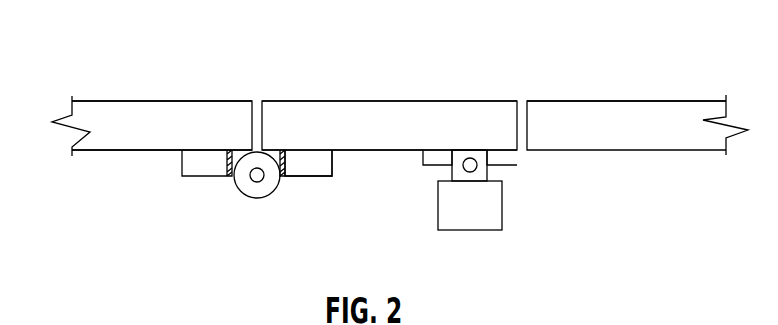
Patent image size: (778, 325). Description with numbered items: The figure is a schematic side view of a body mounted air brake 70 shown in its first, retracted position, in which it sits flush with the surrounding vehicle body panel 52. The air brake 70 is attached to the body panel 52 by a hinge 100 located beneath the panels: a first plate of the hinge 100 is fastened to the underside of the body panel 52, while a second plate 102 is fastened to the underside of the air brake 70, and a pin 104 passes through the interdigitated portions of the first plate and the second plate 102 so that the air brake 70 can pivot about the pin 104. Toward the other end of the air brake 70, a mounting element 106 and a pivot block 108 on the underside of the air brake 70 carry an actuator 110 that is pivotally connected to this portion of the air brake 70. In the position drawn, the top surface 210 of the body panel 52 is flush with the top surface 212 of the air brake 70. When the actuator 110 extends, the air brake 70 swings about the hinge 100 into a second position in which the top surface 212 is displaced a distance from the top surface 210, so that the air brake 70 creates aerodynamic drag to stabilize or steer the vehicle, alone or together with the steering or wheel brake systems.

The body panel 52 is at (118, 117).
The top surface of the body panel 210 is at (187, 100).
The top surface of the air brake 212 is at (312, 101).
The air brake 70 is at (342, 133).
The hinge 100 is at (193, 163).
The second plate 102 is at (103, 154).
The pin 104 is at (258, 178).
The mounting flange 106 is at (352, 152).
The pivot block 108 is at (438, 152).
The actuator 110 is at (482, 231).